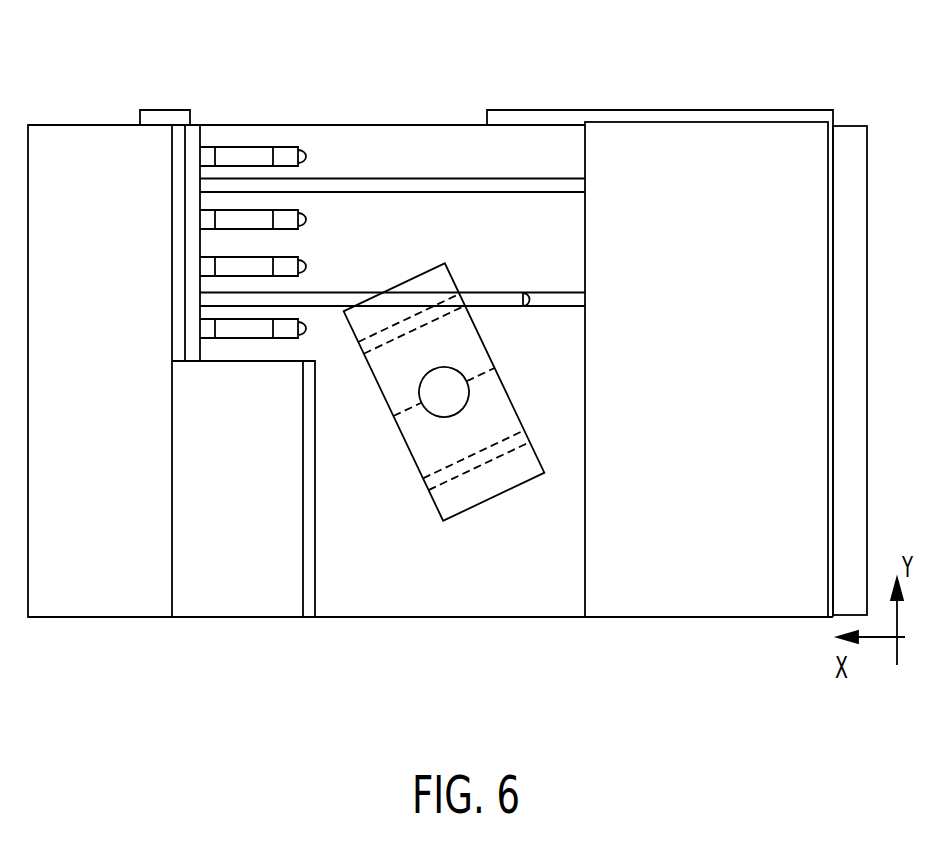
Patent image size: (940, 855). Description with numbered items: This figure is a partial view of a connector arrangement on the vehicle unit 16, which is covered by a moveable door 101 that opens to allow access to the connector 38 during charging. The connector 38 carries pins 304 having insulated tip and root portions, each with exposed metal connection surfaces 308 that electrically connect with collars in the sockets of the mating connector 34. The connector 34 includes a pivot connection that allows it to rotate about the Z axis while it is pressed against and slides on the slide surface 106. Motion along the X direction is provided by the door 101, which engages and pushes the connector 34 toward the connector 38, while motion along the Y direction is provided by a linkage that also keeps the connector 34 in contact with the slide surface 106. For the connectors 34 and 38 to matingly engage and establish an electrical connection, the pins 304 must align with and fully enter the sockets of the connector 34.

The vehicle unit 16 is at (82, 135).
The connector 38 is at (391, 170).
The exposed metal connection surfaces 308 is at (260, 113).
The pins 304 is at (290, 143).
The connector 34 is at (444, 289).
The moveable door 101 is at (687, 153).
The slide surface 106 is at (535, 588).